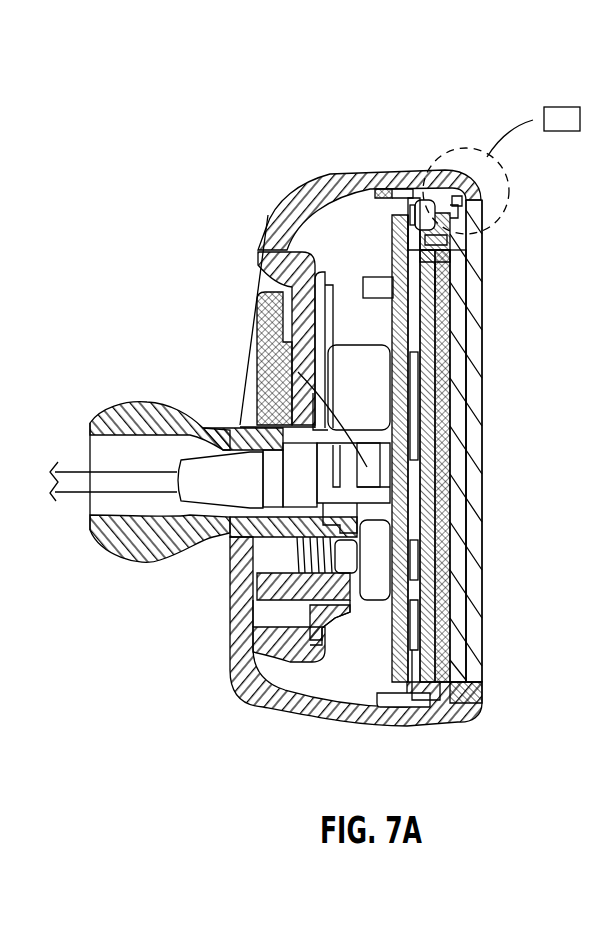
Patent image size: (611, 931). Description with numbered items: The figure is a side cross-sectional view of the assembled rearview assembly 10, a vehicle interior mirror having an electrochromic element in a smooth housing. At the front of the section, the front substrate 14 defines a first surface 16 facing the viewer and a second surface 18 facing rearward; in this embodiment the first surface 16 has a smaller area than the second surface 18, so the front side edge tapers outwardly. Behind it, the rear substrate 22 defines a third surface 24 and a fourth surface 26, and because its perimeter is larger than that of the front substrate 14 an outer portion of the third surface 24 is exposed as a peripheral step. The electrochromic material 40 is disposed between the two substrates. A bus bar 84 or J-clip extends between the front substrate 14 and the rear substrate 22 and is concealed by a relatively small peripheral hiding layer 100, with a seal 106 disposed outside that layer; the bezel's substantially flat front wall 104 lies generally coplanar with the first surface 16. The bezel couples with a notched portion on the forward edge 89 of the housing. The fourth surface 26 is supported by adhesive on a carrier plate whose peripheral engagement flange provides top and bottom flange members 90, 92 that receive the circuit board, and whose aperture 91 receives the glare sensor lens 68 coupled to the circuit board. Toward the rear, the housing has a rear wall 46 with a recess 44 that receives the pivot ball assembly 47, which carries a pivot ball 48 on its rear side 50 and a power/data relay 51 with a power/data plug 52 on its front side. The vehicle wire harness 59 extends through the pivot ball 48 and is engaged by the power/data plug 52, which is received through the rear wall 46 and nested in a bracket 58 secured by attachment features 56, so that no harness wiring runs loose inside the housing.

The rearview assembly 10 is at (458, 86).
The front substrate 14 is at (473, 505).
The first surface 16 is at (483, 537).
The second surface 18 is at (467, 567).
The rear substrate 22 is at (453, 600).
The third surface 24 is at (467, 625).
The fourth surface 26 is at (450, 658).
The electrochromic material 40 is at (465, 307).
The recess 44 is at (260, 615).
The rear wall 46 is at (263, 232).
The pivot ball assembly 47 is at (258, 325).
The pivot ball 48 is at (143, 408).
The rear side 50 is at (255, 575).
The power/data relay 51 is at (262, 357).
The power/data plug 52 is at (330, 492).
The attachment features 56 is at (382, 382).
The bracket 58 is at (261, 308).
The vehicle wire harness 59 is at (80, 472).
The glare sensor lens 68 is at (393, 280).
The bus bar 84 is at (447, 195).
The forward edge 89 is at (413, 193).
The top flange member 90 is at (392, 187).
The aperture 91 is at (447, 283).
The bottom flange member 92 is at (383, 700).
The peripheral hiding layer 100 is at (465, 212).
The front wall 104 is at (478, 188).
The seal 106 is at (473, 200).